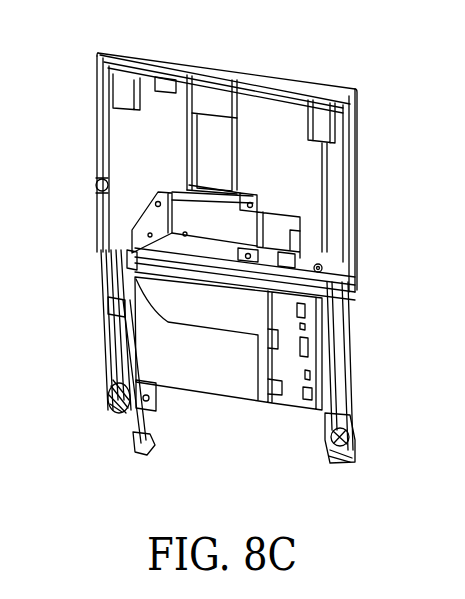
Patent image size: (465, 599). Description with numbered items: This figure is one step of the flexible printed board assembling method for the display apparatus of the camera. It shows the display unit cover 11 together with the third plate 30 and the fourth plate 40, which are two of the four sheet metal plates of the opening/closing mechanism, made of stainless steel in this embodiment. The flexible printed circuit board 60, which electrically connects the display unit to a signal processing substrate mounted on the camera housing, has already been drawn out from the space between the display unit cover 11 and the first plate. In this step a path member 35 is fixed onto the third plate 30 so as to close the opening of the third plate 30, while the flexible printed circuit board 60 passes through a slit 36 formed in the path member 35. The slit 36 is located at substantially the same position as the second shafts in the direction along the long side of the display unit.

The display unit cover 11 is at (212, 63).
The third plate 30 is at (270, 120).
The path member 35 is at (242, 223).
The slit 36 is at (173, 193).
The fourth plate 40 is at (293, 370).
The flexible printed circuit board 60 is at (127, 346).